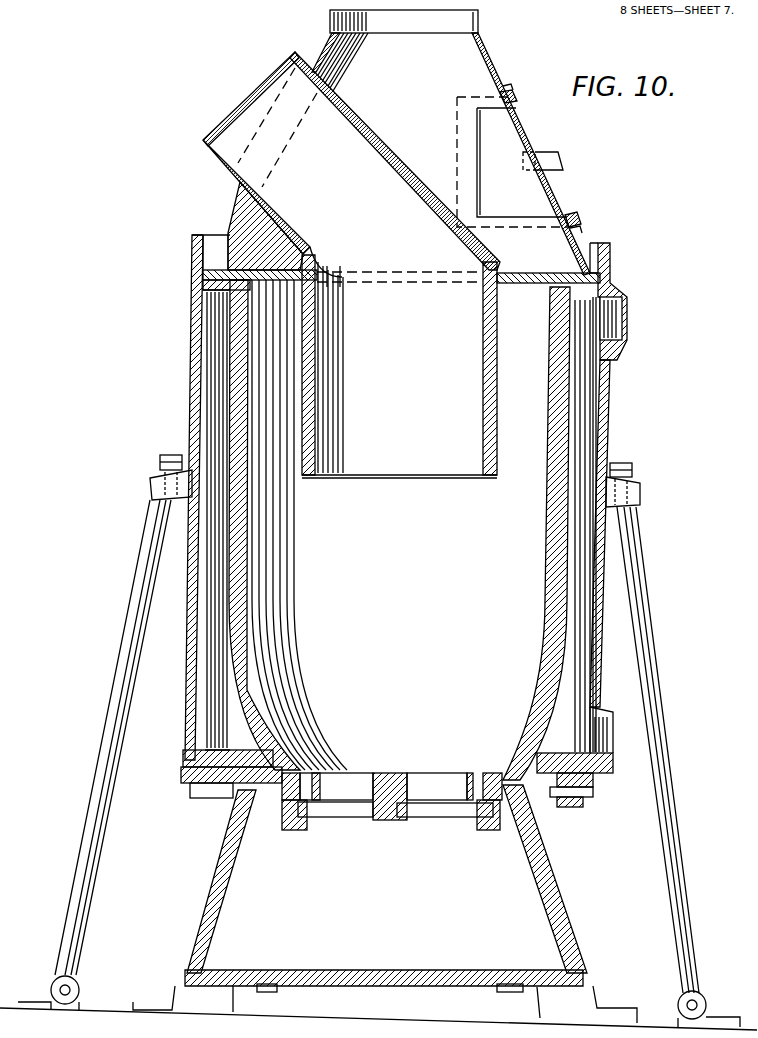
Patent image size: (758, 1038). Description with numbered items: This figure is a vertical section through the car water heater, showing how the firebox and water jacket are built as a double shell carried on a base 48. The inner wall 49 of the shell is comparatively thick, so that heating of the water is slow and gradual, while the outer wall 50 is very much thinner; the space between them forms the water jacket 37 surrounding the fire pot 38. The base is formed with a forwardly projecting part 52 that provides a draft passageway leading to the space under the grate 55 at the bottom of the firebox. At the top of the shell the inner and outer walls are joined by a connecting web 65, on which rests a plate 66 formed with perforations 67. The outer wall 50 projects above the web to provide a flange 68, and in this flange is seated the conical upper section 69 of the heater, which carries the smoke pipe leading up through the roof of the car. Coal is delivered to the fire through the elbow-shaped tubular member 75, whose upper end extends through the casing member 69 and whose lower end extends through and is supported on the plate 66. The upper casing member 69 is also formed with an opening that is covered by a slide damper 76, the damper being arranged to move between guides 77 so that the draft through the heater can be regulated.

The water jacket 37 is at (210, 655).
The fire pot 38 is at (434, 583).
The base 48 is at (553, 895).
The inner wall 49 is at (235, 535).
The outer wall 50 is at (192, 410).
The forwardly projecting part 52 is at (387, 973).
The grate 55 is at (397, 772).
The connecting web 65 is at (603, 293).
The plate 66 is at (226, 233).
The perforations 67 is at (270, 262).
The flange 68 is at (192, 254).
The conical upper section 69 is at (493, 63).
The elbow-shaped tubular member 75 is at (383, 143).
The slide damper 76 is at (557, 191).
The guides 77 is at (511, 93).